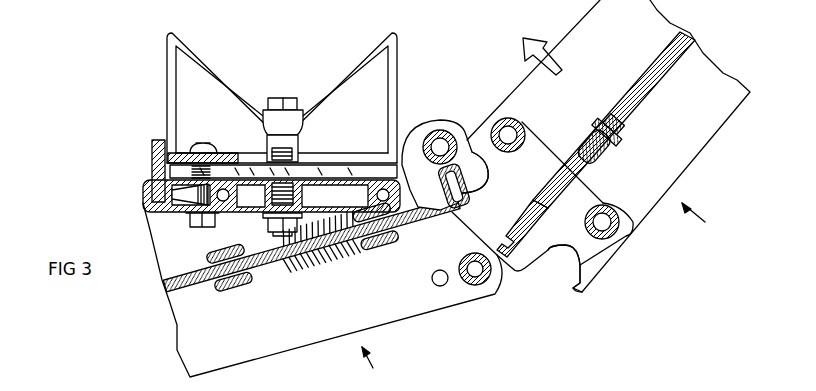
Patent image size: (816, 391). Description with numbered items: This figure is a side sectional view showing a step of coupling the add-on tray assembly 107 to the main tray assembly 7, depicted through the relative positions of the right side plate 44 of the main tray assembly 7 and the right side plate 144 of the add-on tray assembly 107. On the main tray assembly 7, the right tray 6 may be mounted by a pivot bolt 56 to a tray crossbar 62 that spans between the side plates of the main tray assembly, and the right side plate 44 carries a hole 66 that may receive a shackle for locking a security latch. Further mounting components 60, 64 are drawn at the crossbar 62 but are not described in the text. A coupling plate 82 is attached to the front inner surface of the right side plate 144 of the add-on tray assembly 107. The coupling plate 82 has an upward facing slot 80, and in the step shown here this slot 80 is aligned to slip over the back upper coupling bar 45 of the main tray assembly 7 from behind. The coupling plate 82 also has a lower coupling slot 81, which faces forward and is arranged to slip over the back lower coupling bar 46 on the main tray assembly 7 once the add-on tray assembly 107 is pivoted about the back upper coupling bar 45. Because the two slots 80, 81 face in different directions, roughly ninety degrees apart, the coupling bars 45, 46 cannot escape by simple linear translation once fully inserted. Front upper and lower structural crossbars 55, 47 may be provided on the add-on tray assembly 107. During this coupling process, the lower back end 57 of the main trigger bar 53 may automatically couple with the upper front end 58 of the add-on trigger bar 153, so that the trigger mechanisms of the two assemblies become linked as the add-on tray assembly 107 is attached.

The right tray 6 is at (222, 82).
The pivot bolt 56 is at (277, 100).
The bolt 60 is at (227, 149).
The shim 64 is at (153, 153).
The tray crossbar 62 is at (237, 213).
The main trigger bar 53 is at (267, 268).
The right side plate 44 is at (339, 308).
The hole 66 is at (432, 279).
The main tray assembly 7 is at (373, 369).
The coupling plate 82 is at (481, 142).
The upward facing slot 80 is at (490, 175).
The back upper coupling bar 45 is at (433, 129).
The lower back end 57 is at (445, 218).
The back lower coupling bar 46 is at (488, 285).
The right side plate 144 is at (628, 66).
The front upper structural crossbar 55 is at (512, 130).
The add-on trigger bar 153 is at (652, 88).
The upper front end 58 is at (510, 233).
The front lower structural crossbar 47 is at (607, 207).
The add-on tray assembly 107 is at (623, 146).
The lower coupling slot 81 is at (558, 267).